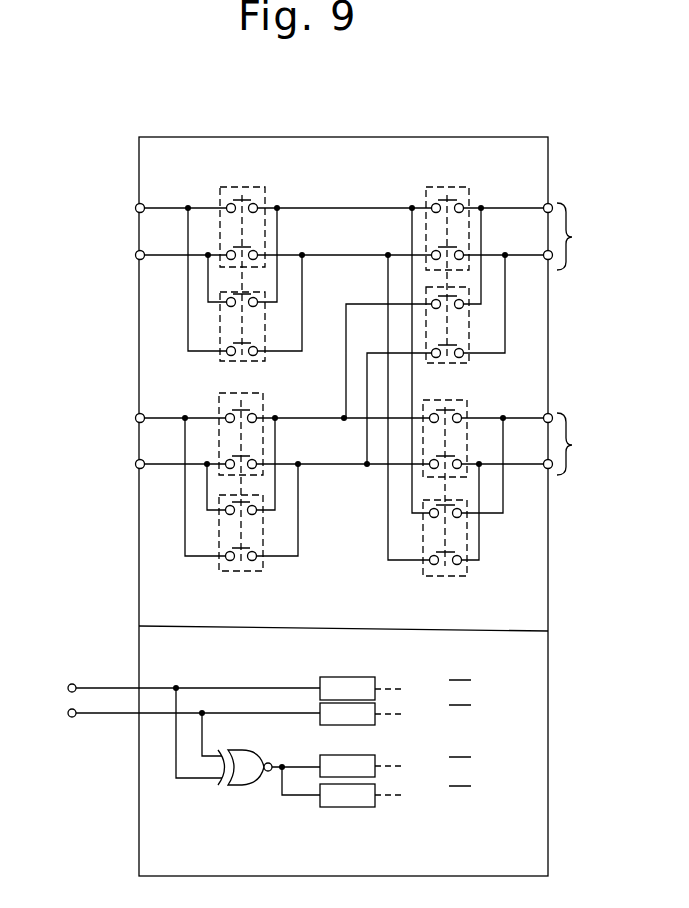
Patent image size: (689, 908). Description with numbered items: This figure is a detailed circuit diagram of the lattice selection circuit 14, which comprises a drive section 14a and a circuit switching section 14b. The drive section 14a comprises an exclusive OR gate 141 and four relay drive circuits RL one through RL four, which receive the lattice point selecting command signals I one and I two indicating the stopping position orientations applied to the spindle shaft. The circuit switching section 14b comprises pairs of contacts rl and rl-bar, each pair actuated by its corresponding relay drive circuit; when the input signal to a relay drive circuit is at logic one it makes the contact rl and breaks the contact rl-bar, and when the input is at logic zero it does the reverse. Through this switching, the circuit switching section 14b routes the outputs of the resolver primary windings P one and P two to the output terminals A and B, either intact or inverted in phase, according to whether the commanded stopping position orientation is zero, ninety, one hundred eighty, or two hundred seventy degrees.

The lattice selection circuit 14 is at (543, 333).
The drive section 14a is at (539, 670).
The circuit switching section 14b is at (542, 545).
The exclusive OR gate 141 is at (231, 787).